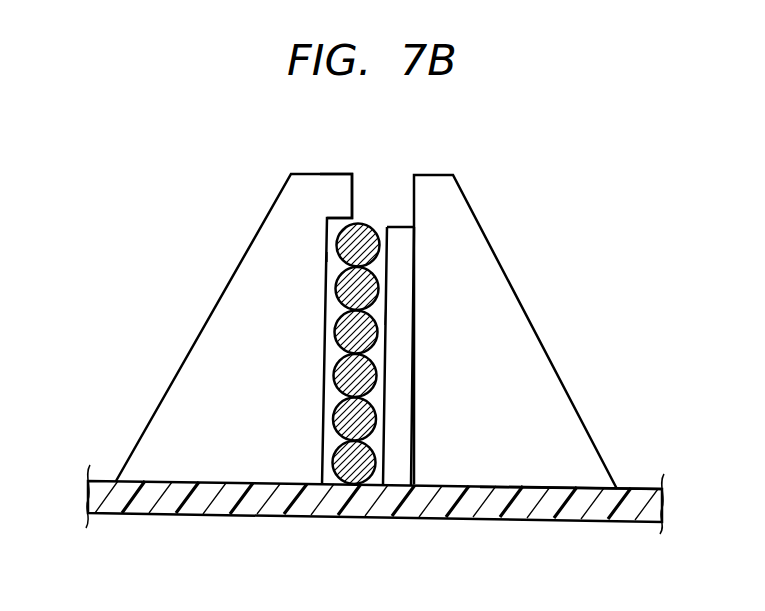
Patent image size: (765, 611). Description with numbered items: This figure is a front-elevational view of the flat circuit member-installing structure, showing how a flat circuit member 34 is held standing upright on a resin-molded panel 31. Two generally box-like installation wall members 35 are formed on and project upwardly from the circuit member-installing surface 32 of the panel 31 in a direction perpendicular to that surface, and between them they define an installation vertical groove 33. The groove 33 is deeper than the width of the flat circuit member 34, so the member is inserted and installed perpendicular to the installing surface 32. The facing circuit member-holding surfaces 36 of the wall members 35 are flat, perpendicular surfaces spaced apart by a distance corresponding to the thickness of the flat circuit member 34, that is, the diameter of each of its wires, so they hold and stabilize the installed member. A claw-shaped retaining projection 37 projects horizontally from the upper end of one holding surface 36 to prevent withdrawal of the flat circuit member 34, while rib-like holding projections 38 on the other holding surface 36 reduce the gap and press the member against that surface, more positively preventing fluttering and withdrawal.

The resin-molded panel 31 is at (105, 481).
The circuit member-installing surface 32 is at (630, 489).
The installation vertical groove 33 is at (330, 434).
The flat circuit member 34 is at (385, 314).
The installation wall member 35 is at (216, 326).
The circuit member-holding surface 36 is at (327, 257).
The retaining projection 37 is at (337, 180).
The holding projection 38 is at (397, 475).